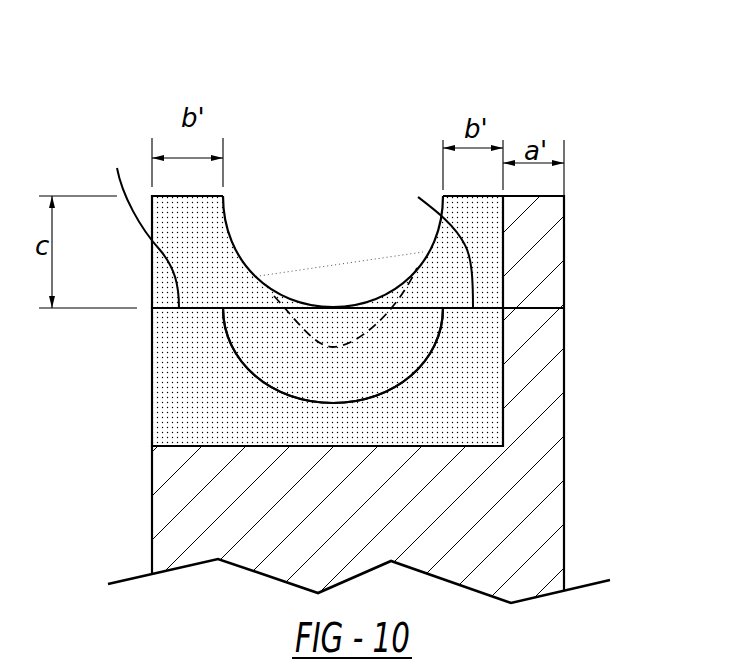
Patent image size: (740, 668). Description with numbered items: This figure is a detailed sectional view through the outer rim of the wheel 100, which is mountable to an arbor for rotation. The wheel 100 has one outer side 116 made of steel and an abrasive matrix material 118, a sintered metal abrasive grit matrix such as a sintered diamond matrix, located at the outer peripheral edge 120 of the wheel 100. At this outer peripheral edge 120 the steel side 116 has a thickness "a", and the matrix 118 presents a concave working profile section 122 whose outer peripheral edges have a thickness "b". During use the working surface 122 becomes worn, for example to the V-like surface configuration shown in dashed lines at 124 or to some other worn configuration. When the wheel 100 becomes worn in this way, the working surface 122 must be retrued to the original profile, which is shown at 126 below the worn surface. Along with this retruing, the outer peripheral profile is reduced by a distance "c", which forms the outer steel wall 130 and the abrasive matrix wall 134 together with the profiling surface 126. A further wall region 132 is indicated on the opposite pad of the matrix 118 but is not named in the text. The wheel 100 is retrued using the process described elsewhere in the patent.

The wheel 100 is at (614, 134).
The outer side 116 is at (565, 375).
The abrasive matrix material 118 is at (475, 410).
The outer peripheral edge 120 is at (554, 194).
The concave working profile section 122 is at (228, 207).
The worn "V" like surface configuration 124 is at (274, 296).
The retrued original profile 126 is at (270, 380).
The outer steel wall 130 is at (540, 307).
The left pad 132 is at (157, 223).
The abrasive matrix wall 134 is at (449, 238).